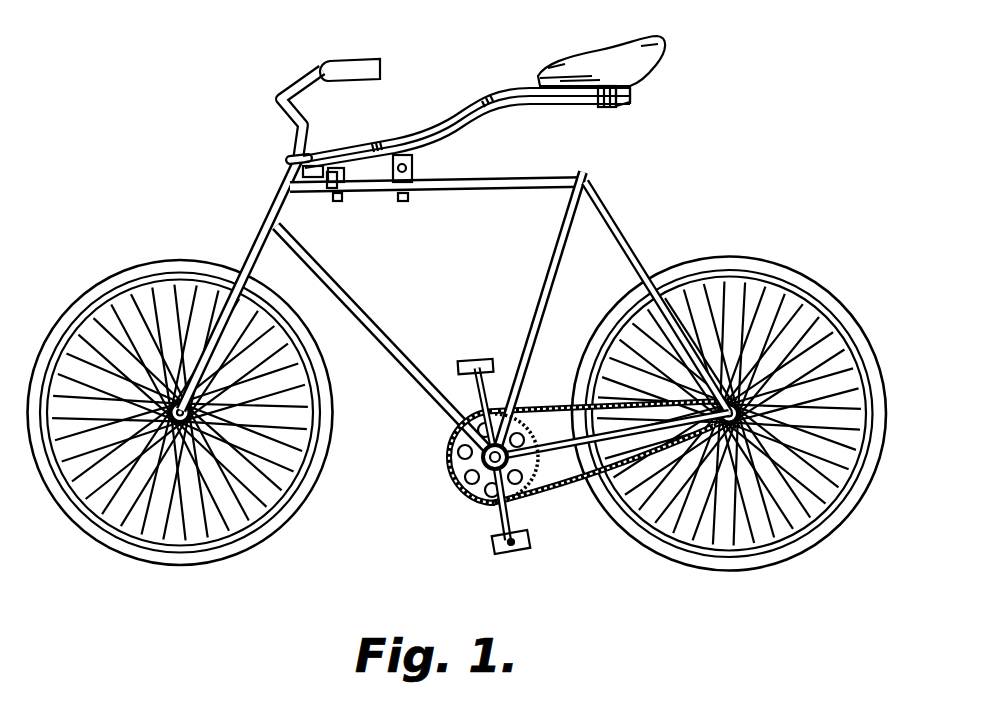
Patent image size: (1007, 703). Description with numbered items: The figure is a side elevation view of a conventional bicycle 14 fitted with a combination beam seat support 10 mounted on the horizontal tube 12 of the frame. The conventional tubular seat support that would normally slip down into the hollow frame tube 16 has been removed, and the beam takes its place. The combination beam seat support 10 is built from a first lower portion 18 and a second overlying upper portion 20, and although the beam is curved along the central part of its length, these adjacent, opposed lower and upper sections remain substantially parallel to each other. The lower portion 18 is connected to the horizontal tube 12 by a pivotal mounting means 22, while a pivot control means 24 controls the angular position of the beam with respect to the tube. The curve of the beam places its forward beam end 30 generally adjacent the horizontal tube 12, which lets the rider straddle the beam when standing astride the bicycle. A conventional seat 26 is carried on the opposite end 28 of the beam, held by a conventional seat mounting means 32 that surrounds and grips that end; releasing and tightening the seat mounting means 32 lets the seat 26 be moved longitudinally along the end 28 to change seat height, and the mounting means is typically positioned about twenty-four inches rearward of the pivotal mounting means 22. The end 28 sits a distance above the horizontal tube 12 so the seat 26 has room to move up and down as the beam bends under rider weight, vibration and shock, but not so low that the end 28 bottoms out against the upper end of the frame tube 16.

The combination beam seat support 10 is at (444, 104).
The horizontal tube 12 is at (511, 192).
The conventional bicycle 14 is at (618, 202).
The hollow frame tube 16 is at (550, 273).
The first lower portion 18 is at (440, 143).
The second overlying upper portion 20 is at (375, 140).
The pivotal mounting means 22 is at (348, 204).
The pivot control means 24 is at (420, 194).
The conventional seat 26 is at (667, 42).
The end of combination beam 28 is at (636, 107).
The beam end 30 is at (318, 146).
The seat mounting means 32 is at (607, 107).